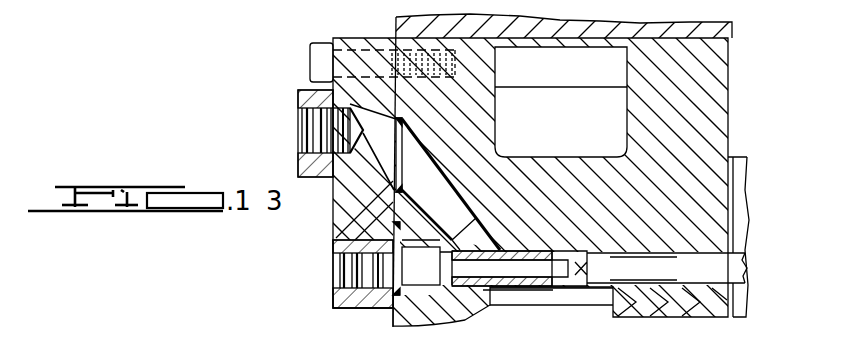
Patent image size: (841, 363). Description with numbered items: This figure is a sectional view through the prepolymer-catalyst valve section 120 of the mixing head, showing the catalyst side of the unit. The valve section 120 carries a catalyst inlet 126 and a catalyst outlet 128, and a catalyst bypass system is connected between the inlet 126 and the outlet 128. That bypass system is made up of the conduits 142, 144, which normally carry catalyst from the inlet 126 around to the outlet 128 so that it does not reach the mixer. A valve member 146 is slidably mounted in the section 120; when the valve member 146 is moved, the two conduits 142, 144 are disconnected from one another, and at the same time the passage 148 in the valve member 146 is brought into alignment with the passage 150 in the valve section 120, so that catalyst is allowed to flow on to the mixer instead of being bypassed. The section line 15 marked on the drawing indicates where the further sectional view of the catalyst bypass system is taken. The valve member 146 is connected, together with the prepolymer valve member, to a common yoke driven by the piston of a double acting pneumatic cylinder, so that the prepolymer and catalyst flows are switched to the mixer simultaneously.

The prepolymer-catalyst valve section 120 is at (729, 148).
The catalyst inlet 126 is at (338, 278).
The catalyst outlet 128 is at (300, 141).
The conduit 142 is at (417, 282).
The conduit 144 is at (432, 160).
The valve member 146 is at (726, 281).
The passage 148 is at (588, 266).
The passage 150 is at (607, 309).
The section line 15- 15 is at (590, 244).